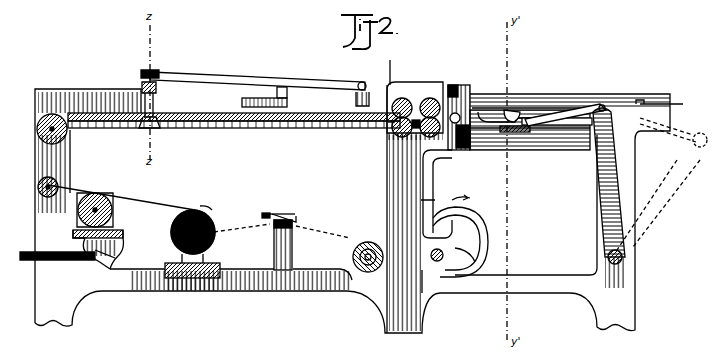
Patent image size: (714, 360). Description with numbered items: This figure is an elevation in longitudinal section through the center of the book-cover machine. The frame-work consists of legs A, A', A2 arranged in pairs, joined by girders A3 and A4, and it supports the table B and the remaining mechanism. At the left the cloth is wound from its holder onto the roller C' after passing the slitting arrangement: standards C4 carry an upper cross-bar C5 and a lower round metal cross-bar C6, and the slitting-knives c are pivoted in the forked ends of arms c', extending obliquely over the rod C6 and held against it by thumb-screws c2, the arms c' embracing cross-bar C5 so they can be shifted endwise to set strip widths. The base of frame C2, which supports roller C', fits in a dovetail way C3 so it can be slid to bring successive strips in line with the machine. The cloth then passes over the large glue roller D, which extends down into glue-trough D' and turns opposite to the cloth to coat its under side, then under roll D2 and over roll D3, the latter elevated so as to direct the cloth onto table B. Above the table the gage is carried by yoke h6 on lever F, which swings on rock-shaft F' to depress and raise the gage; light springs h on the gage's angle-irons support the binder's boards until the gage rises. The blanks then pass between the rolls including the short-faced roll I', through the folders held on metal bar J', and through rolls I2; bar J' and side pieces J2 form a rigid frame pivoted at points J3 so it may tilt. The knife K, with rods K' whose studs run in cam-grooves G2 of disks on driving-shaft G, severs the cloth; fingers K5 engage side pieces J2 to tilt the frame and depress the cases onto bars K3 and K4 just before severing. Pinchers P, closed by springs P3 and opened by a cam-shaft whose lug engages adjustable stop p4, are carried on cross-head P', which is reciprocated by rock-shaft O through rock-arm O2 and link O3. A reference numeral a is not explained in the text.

The legs A is at (352, 209).
The legs A' is at (373, 317).
The legs A2 is at (597, 325).
The girder A3 is at (228, 291).
The girder A4 is at (257, 128).
The table B is at (194, 113).
The yoke h6 is at (283, 128).
The roll D3 is at (40, 126).
The roll D2 is at (38, 188).
The roller D is at (121, 223).
The trough D' is at (80, 232).
The roller C' is at (201, 234).
The frame C2 is at (218, 266).
The way C3 is at (170, 262).
The cross-bar C5 is at (264, 214).
The thumb-screws c2 is at (283, 213).
The arms c' is at (297, 207).
The standards C4 is at (297, 218).
The slitting-knives c is at (304, 222).
The cross-bar C6 is at (293, 235).
The shaft a is at (353, 257).
The lever F is at (252, 93).
The rock-shaft F' is at (363, 82).
The springs h is at (264, 97).
The side pieces J2 is at (452, 76).
The metal bar J' is at (416, 87).
The rolls I2 is at (430, 98).
The roll I' is at (396, 110).
The pivot points J3 is at (393, 130).
The knife K is at (469, 109).
The fingers K5 is at (458, 86).
The bar K3 is at (470, 150).
The bar K4 is at (458, 150).
The rods K' is at (436, 194).
The cam-grooves G2 is at (460, 236).
The driving-shaft G is at (436, 262).
The pinchers P is at (570, 112).
The springs P3 is at (512, 110).
The cross-head P' is at (557, 99).
The rod or link O3 is at (583, 104).
The adjustable stop p4 is at (669, 104).
The rock-arm O2 is at (605, 198).
The rock-shaft O is at (623, 257).